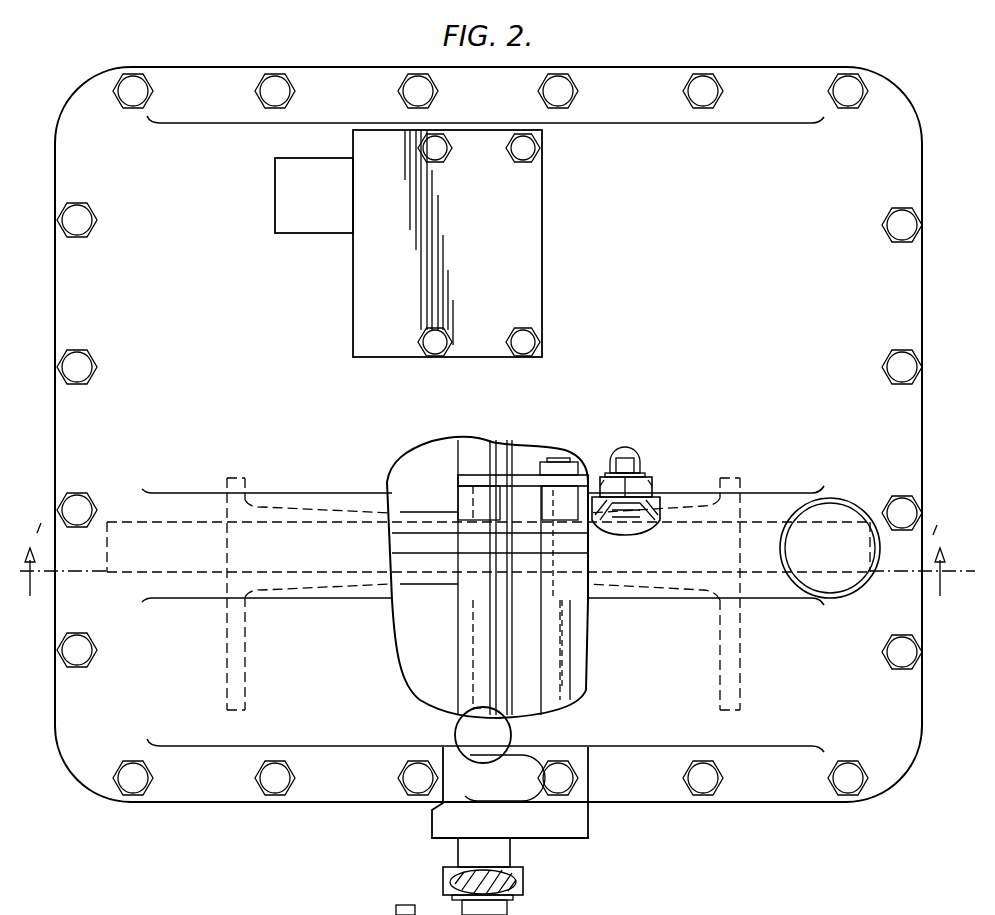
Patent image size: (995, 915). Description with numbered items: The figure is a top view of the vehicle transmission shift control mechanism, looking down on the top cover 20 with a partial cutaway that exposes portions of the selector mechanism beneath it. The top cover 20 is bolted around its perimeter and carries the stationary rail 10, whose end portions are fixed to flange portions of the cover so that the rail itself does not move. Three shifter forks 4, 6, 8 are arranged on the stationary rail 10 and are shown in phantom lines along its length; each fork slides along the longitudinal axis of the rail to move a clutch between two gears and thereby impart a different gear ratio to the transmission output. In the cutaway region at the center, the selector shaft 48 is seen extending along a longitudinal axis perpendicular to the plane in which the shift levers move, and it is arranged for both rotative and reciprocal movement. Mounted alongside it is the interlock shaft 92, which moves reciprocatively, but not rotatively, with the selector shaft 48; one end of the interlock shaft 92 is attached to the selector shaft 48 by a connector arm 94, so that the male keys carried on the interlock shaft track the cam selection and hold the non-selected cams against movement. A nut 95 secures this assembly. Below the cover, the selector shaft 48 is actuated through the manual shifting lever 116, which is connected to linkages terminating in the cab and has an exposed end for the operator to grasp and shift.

The top cover 20 is at (724, 172).
The stationary rail 10 is at (410, 506).
The connector arm 94 is at (535, 470).
The lock nut 95 is at (652, 482).
The selector shaft 48 is at (455, 609).
The shifter fork 6 is at (470, 662).
The interlock shaft 92 is at (567, 648).
The shifter fork 8 is at (720, 688).
The shifter fork 4 is at (227, 658).
The manual shifting lever 116 is at (512, 885).